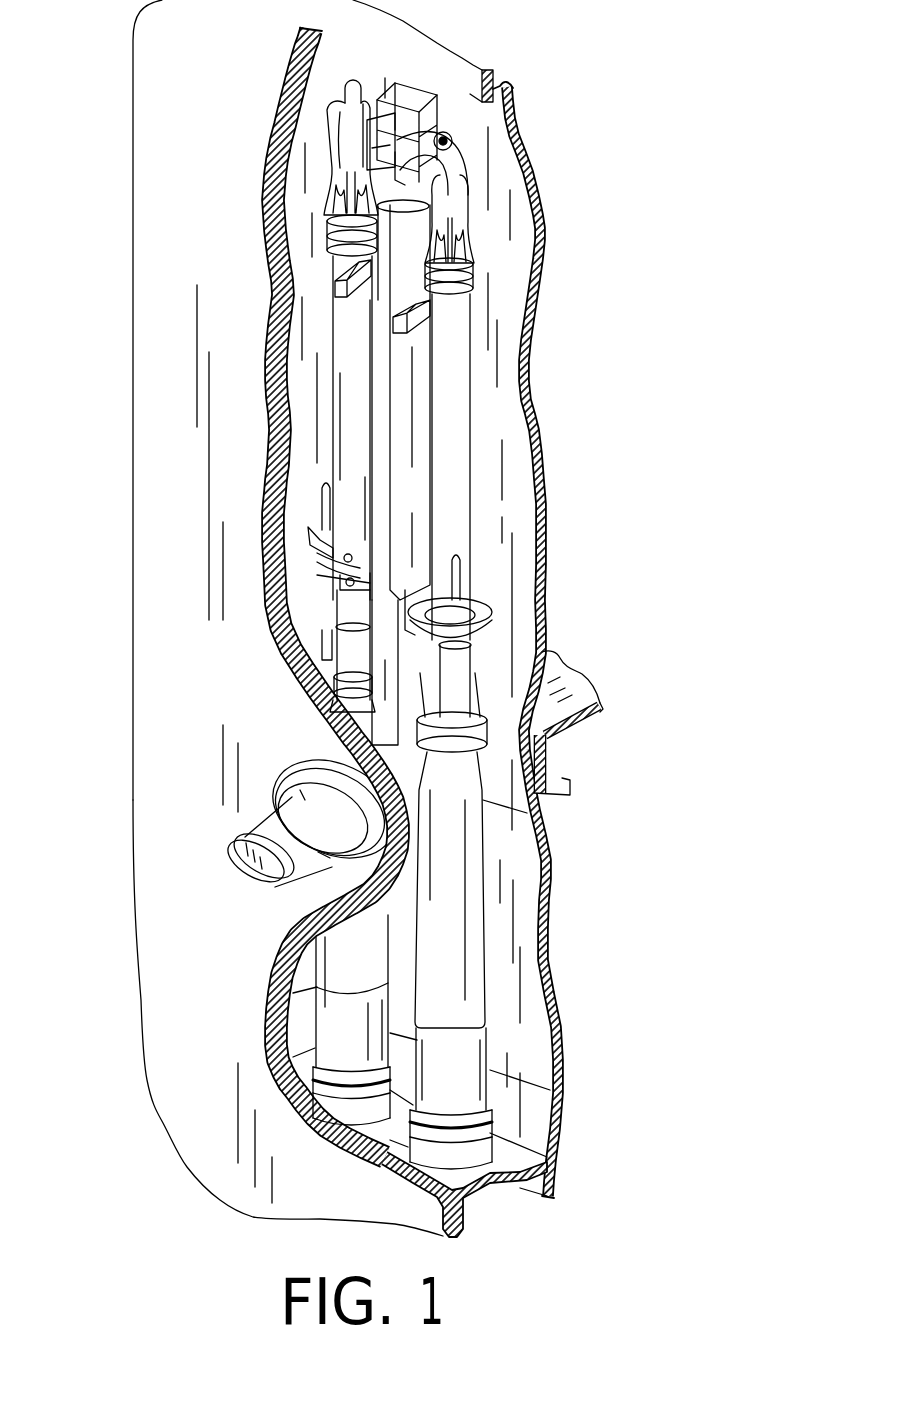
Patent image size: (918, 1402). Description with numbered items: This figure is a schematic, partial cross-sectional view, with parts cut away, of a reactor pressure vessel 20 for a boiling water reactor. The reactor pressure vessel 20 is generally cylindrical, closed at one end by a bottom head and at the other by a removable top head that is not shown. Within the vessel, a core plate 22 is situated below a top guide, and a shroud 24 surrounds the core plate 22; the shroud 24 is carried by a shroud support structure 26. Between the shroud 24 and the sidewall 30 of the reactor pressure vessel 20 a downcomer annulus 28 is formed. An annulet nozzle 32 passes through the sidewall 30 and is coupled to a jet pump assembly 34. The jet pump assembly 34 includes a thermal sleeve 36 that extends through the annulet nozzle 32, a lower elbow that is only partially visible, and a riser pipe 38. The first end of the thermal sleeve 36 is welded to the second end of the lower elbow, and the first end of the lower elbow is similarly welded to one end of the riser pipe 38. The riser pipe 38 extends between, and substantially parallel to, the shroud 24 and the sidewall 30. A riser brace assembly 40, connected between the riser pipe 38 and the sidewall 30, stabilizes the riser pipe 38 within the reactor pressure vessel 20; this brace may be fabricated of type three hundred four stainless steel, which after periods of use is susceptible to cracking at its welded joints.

The reactor pressure vessel 20 is at (140, 1062).
The core plate 22 is at (585, 688).
The shroud 24 is at (527, 593).
The shroud support structure 26 is at (563, 1127).
The downcomer annulus 28 is at (508, 380).
The sidewall 30 is at (270, 1022).
The annulet nozzle 32 is at (280, 805).
The jet pump assembly 34 is at (323, 477).
The thermal sleeve 36 is at (240, 855).
The riser pipe 38 is at (370, 402).
The riser brace assembly 40 is at (333, 293).